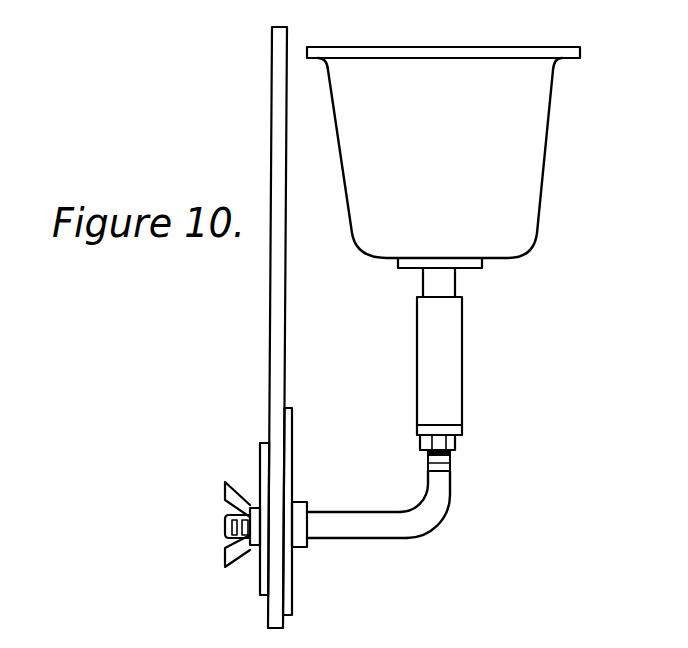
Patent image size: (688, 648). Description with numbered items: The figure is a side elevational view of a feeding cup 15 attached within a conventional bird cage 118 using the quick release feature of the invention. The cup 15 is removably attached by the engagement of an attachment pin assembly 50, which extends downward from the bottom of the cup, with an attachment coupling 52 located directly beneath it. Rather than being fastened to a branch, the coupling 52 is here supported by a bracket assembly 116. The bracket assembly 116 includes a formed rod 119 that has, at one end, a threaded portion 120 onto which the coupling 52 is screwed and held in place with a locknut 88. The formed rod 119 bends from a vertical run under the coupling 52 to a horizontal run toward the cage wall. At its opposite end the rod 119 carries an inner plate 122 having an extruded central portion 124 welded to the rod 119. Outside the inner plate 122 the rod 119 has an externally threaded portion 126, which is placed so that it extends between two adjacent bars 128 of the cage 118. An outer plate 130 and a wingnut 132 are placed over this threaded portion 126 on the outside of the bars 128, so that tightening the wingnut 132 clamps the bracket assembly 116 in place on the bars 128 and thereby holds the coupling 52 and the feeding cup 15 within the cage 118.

The feeding cup 15 is at (543, 185).
The attachment pin assembly 50 is at (455, 283).
The attachment coupling 52 is at (463, 366).
The locknut 88 is at (458, 441).
The bracket assembly 116 is at (554, 506).
The bird cage 118 is at (563, 430).
The formed rod 119 is at (441, 519).
The threaded portion 120 is at (430, 465).
The inner plate 122 is at (293, 408).
The extruded central portion 124 is at (297, 548).
The externally threaded portion 126 is at (226, 524).
The bars 128 is at (270, 337).
The outer plate 130 is at (260, 467).
The wingnut 132 is at (225, 568).